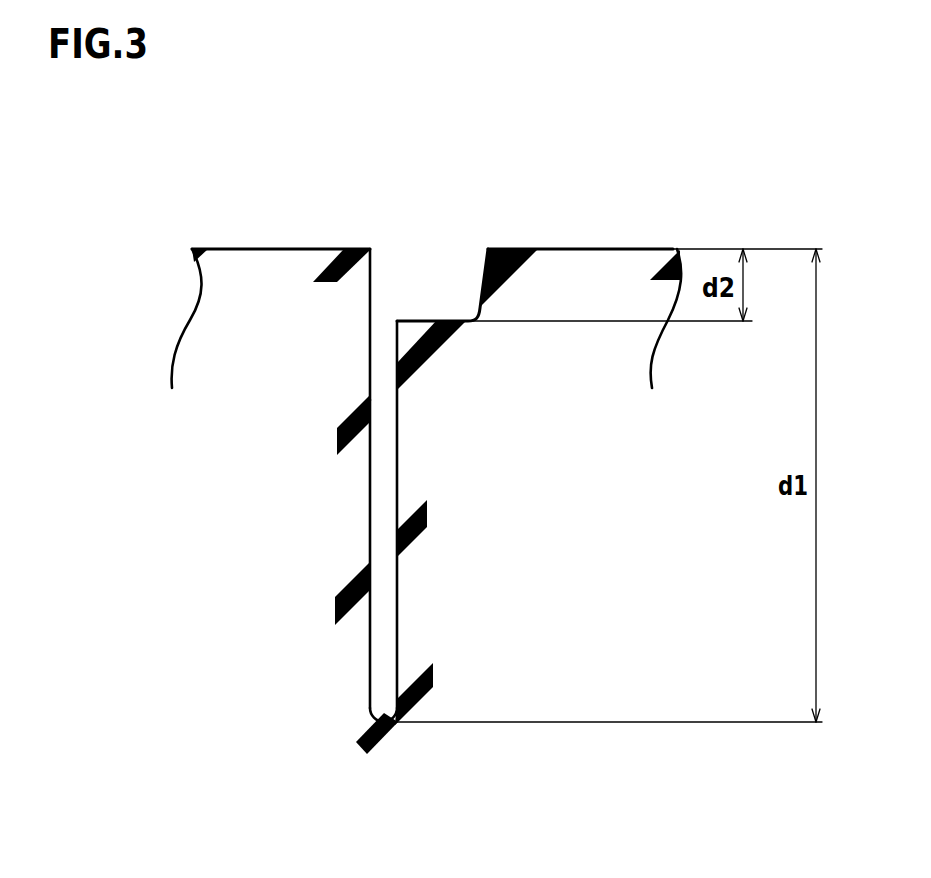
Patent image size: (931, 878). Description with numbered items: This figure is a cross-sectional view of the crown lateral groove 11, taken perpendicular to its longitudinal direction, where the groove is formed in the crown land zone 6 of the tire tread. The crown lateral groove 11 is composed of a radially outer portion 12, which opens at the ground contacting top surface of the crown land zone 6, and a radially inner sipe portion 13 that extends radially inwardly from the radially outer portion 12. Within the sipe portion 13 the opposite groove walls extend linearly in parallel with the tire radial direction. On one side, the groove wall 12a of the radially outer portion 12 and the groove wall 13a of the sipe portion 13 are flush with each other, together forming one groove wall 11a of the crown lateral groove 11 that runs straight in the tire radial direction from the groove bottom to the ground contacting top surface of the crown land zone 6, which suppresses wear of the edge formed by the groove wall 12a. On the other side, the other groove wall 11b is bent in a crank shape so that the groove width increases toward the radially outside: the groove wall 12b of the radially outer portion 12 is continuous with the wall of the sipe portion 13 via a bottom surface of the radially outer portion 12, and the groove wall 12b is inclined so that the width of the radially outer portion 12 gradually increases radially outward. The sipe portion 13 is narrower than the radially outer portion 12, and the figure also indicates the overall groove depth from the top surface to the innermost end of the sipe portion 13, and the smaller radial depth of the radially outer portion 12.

The crown land zone 6 is at (297, 247).
The crown lateral groove 11 is at (346, 537).
The one groove wall 11a is at (370, 508).
The other groove wall 11b is at (397, 417).
The radially outer portion 12 is at (371, 292).
The one groove wall of the radially outer portion 12a is at (372, 277).
The groove wall of the radially outer portion 12b is at (402, 298).
The sipe portion 13 is at (301, 616).
The one groove wall of the sipe portion 13a is at (370, 628).